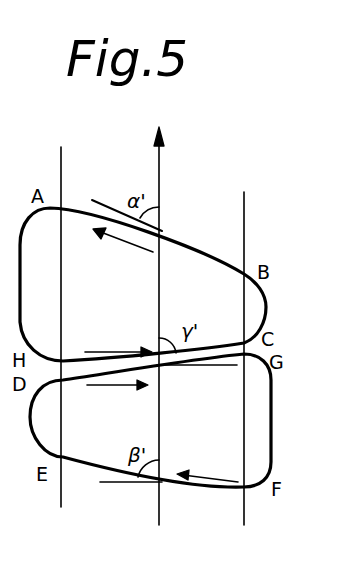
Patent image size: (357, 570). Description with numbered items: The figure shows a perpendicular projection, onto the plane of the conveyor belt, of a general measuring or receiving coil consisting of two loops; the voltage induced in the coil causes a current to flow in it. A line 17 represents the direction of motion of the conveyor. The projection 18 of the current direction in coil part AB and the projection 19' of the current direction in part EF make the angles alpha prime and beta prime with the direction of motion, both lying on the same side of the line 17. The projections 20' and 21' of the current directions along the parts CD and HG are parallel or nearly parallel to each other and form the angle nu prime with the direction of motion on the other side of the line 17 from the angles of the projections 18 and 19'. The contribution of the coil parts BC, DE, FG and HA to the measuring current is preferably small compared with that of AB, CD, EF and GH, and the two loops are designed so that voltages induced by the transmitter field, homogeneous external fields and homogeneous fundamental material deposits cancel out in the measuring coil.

The line representing the direction of motion 17 is at (142, 326).
The projection of the current direction in part AB 18 is at (123, 250).
The projection of the current direction in part EF 19' is at (207, 470).
The projection of the current direction along part CD 20' is at (118, 343).
The projection of the current direction along part HG 21' is at (117, 397).